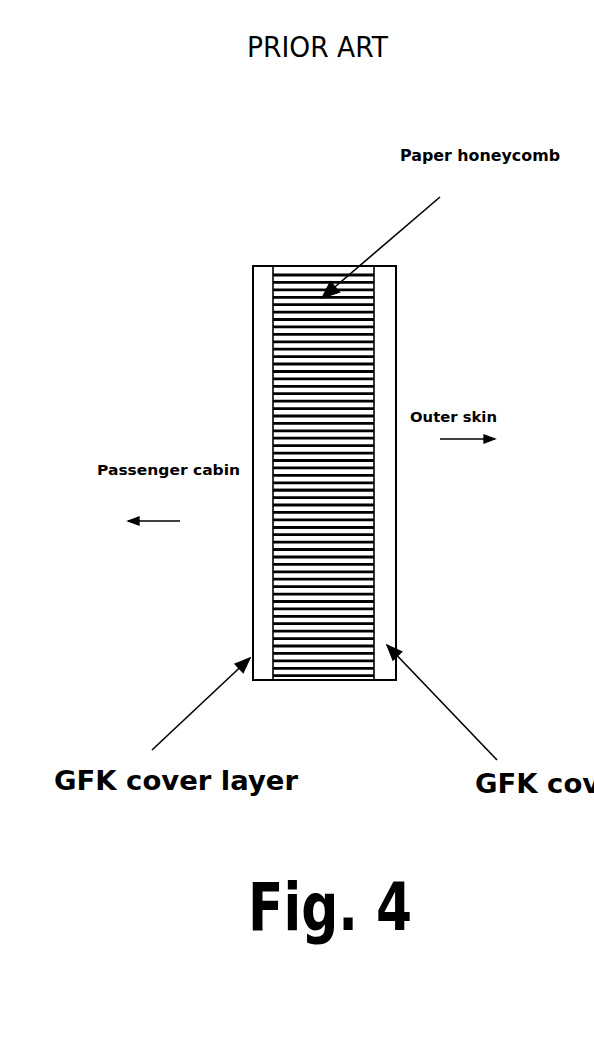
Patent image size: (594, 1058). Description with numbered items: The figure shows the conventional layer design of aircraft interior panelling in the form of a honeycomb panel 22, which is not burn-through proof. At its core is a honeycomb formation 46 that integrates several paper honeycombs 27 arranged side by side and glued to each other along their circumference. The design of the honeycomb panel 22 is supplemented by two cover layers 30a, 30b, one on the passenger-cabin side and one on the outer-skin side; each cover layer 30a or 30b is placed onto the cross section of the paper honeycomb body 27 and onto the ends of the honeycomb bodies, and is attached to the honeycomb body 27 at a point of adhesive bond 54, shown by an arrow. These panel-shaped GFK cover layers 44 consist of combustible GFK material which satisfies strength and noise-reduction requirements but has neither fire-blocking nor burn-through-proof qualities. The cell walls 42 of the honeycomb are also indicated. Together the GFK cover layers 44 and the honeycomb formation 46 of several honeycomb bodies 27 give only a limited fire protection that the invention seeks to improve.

The honeycomb panel 22 is at (170, 318).
The GFK cover layer 44 is at (252, 621).
The point of adhesive bond 54 is at (273, 363).
The paper honeycomb 27 is at (350, 410).
The honeycomb cell walls 42 is at (327, 527).
The cover layer 30a is at (262, 388).
The cover layer 30b is at (388, 580).
The honeycomb formation 46 is at (342, 682).